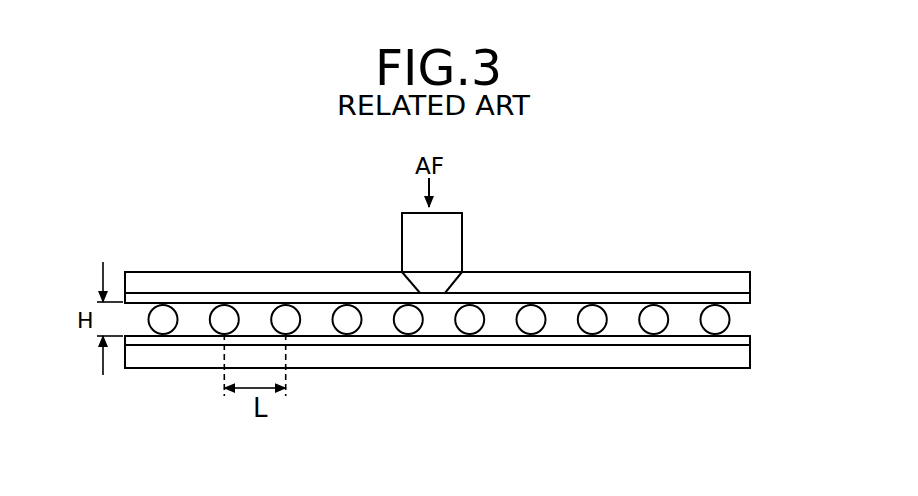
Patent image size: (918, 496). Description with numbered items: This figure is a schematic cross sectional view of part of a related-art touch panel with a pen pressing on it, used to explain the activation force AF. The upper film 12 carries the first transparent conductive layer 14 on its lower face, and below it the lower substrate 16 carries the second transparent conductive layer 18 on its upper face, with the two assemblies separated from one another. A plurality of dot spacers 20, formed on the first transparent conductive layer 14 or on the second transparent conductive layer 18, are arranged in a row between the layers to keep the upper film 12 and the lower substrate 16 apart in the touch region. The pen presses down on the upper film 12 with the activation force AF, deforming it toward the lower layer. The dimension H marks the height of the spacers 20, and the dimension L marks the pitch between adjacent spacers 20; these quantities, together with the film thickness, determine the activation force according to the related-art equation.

The upper film 12 is at (750, 281).
The first transparent conductive layer 14 is at (750, 298).
The lower substrate 16 is at (750, 358).
The second transparent conductive layer 18 is at (750, 338).
The dot spacers 20 is at (730, 318).